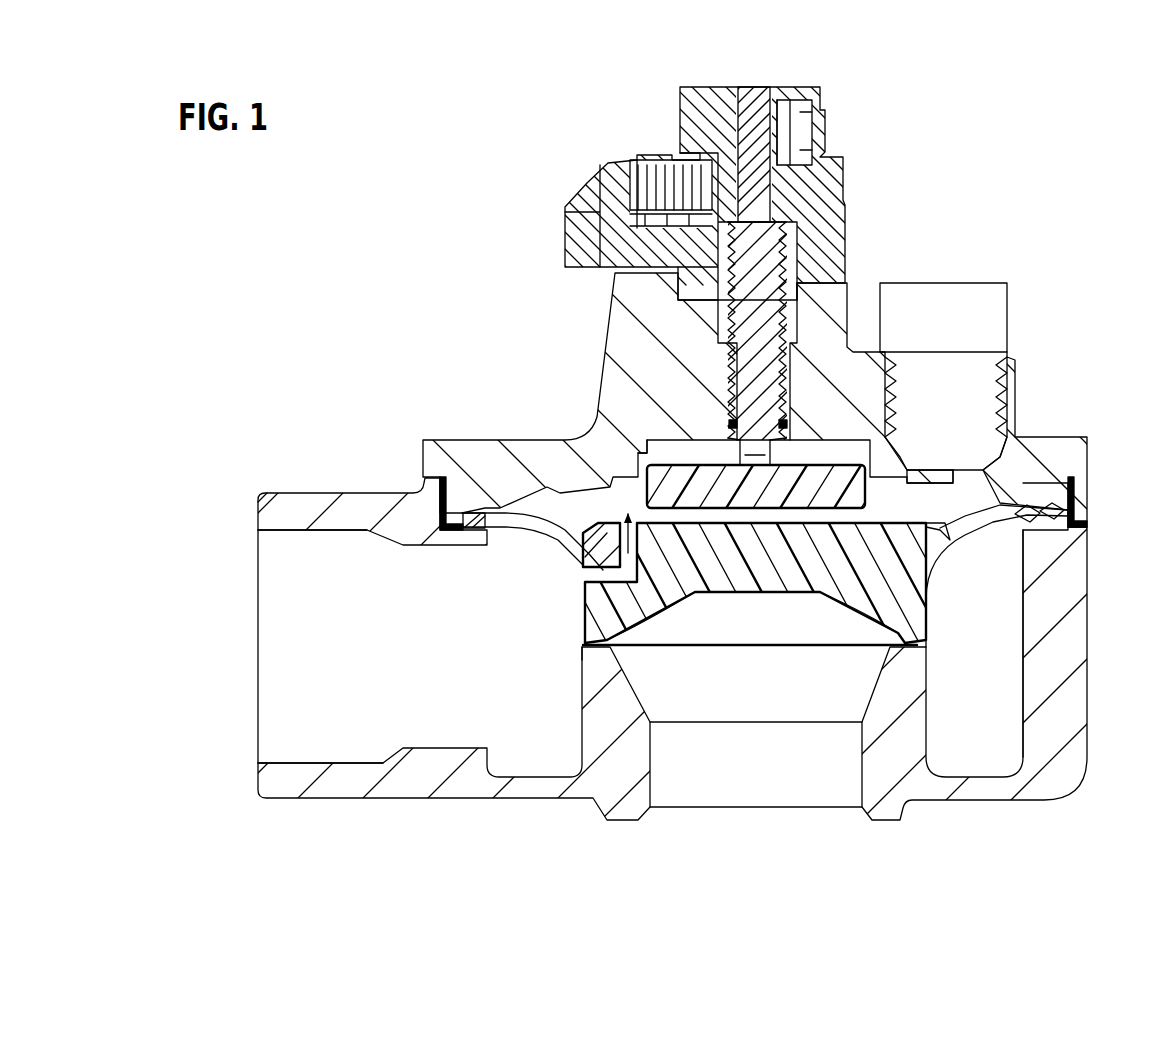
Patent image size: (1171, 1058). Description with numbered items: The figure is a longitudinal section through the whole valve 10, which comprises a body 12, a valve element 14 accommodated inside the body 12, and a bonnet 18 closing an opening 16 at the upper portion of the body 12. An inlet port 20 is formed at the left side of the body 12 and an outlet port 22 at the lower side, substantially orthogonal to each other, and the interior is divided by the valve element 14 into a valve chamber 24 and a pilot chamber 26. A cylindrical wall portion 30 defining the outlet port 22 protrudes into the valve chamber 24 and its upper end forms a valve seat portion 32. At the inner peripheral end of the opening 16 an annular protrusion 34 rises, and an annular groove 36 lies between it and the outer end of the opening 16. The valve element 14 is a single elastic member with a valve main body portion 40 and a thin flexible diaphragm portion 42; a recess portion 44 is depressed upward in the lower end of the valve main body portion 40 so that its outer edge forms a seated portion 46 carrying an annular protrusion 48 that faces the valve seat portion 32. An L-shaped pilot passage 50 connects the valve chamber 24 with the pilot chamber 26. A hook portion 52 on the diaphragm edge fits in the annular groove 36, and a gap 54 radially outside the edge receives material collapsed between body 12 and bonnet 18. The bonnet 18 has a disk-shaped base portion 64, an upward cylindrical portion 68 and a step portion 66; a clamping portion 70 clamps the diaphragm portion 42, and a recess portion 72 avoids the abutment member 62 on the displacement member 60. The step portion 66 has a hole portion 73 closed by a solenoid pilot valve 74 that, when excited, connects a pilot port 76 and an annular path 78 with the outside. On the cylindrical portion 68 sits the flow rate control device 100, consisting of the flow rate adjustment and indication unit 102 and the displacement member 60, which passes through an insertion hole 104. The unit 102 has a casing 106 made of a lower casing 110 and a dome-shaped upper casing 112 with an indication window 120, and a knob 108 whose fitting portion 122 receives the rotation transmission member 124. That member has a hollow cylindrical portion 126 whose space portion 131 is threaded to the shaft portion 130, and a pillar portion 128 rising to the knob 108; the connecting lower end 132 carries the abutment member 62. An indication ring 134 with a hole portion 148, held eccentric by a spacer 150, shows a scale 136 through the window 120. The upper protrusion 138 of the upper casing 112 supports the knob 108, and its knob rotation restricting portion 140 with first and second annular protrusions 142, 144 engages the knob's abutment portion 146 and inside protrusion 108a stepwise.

The valve 10 is at (326, 217).
The body 12 is at (1092, 700).
The valve element 14 is at (796, 585).
The opening 16 is at (1066, 473).
The bonnet 18 is at (1049, 435).
The inlet port 20 is at (288, 763).
The outlet port 22 is at (652, 763).
The valve chamber 24 is at (1023, 693).
The pilot chamber 26 is at (555, 490).
The cylindrical wall portion 30 is at (915, 721).
The valve seat portion 32 is at (582, 647).
The annular protrusion 34 is at (1042, 520).
The annular groove 36 is at (1076, 525).
The valve main body portion 40 is at (915, 618).
The diaphragm portion 42 is at (950, 540).
The recess portion 44 is at (732, 594).
The seated portion 46 is at (923, 644).
The annular protrusion 48 is at (583, 663).
The pilot passage 50 is at (592, 578).
The hook portion 52 is at (456, 530).
The gap 54 is at (432, 483).
The displacement member 60 is at (765, 398).
The abutment member 62 is at (840, 462).
The base portion 64 is at (460, 450).
The step portion 66 is at (1007, 375).
The cylindrical portion 68 is at (620, 345).
The clamping portion 70 is at (1070, 494).
The recess portion 72 is at (657, 447).
The hole portion 73 is at (926, 405).
The pilot valve 74 is at (993, 317).
The pilot port 76 is at (953, 483).
The annular path 78 is at (882, 480).
The flow rate control device 100 is at (716, 181).
The flow rate adjustment and indication unit 102 is at (675, 129).
The insertion hole 104 is at (740, 450).
The casing 106 is at (905, 228).
The knob 108 is at (777, 97).
The inside protrusion 108a is at (838, 174).
The lower casing 110 is at (874, 249).
The upper casing 112 is at (842, 207).
The indication window 120 is at (567, 207).
The fitting portion 122 is at (732, 110).
The rotation transmission member 124 is at (800, 332).
The cylindrical portion 126 is at (727, 347).
The pillar portion 128 is at (752, 118).
The shaft portion 130 is at (745, 330).
The space portion 131 is at (725, 325).
The connecting lower end 132 is at (773, 453).
The indication ring 134 is at (594, 177).
The scale 136 is at (585, 177).
The upper protrusion 138 is at (803, 97).
The knob rotation restricting portion 140 is at (712, 98).
The first annular protrusion 142 is at (812, 123).
The second annular protrusion 144 is at (815, 150).
The abutment portion 146 is at (827, 107).
The hole portion 148 is at (752, 266).
The spacer 150 is at (618, 276).